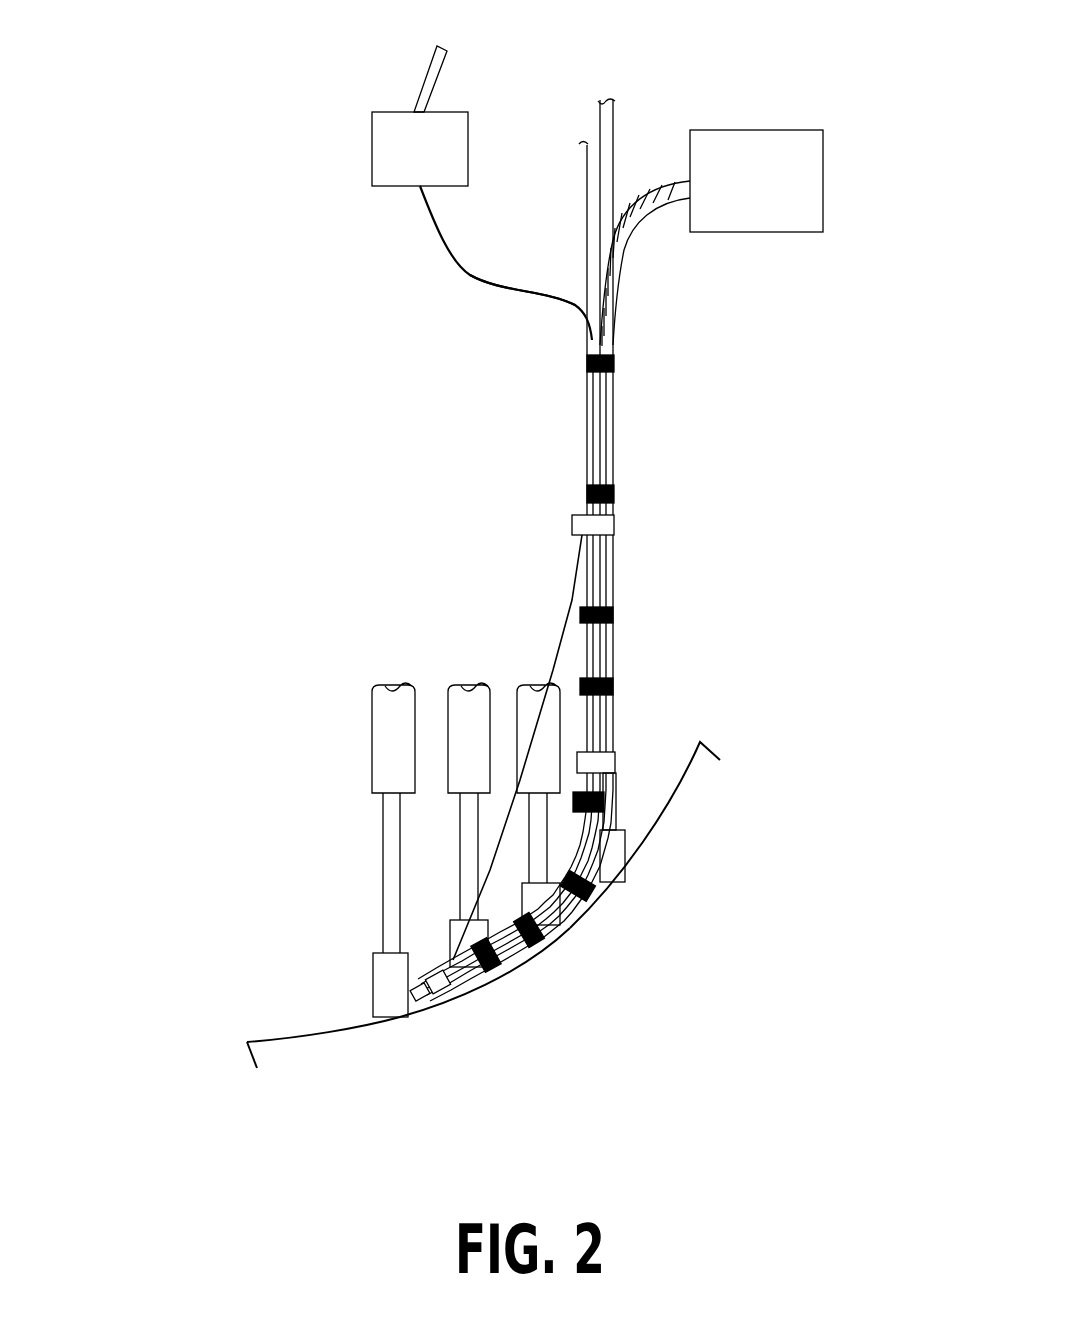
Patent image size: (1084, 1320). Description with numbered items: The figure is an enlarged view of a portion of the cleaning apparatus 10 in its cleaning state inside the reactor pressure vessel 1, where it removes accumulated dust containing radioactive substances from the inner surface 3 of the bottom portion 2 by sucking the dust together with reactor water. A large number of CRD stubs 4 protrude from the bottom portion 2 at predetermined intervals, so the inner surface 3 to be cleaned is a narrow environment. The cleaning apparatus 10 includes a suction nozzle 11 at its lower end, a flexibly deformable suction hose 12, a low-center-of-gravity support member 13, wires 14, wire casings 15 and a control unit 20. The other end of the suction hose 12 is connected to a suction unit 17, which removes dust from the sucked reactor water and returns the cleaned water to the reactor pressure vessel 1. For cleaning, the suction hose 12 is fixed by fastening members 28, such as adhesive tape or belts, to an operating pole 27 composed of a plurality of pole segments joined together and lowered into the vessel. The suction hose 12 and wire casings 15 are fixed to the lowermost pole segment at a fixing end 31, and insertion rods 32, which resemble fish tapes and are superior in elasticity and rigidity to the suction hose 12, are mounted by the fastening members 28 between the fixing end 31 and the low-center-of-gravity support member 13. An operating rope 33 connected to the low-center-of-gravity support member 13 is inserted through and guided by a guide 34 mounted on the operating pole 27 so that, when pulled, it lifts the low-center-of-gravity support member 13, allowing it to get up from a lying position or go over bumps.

The reactor pressure vessel 1 is at (695, 805).
The bottom portion 2 is at (313, 1047).
The inner surface 3 is at (292, 1040).
The CRD stubs 4 is at (372, 963).
The cleaning apparatus 10 is at (262, 437).
The suction nozzle 11 is at (418, 997).
The suction hose 12 is at (614, 243).
The low-center-of-gravity support member 13 is at (440, 1000).
The wires 14 is at (405, 263).
The wire casings 15 is at (458, 266).
The suction unit 17 is at (826, 178).
The control unit 20 is at (372, 160).
The operating pole 27 is at (614, 440).
The fastening members 28 is at (615, 362).
The fixing end 31 is at (616, 762).
The insertion rods 32 is at (571, 853).
The operating rope 33 is at (573, 622).
The guide 34 is at (615, 526).